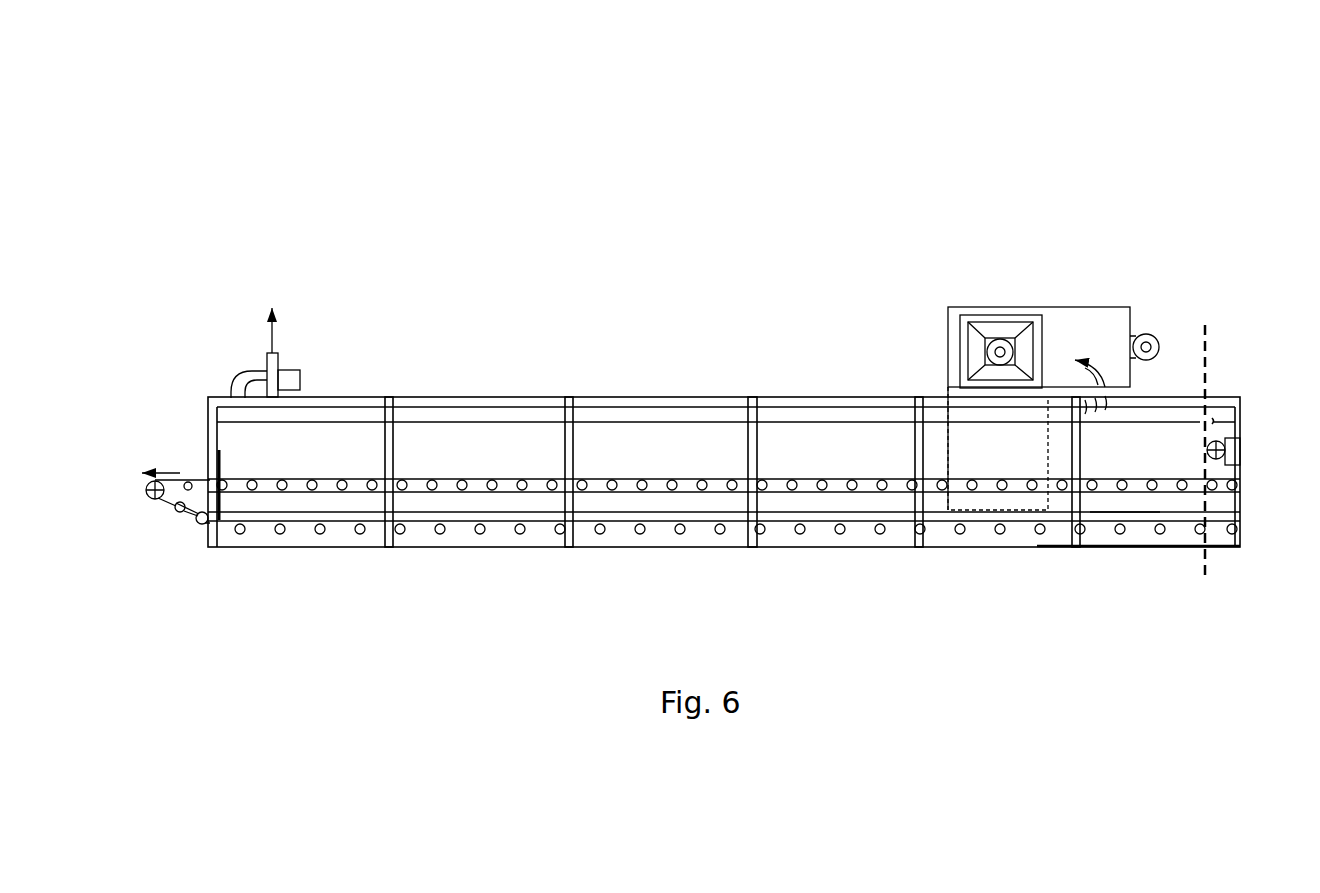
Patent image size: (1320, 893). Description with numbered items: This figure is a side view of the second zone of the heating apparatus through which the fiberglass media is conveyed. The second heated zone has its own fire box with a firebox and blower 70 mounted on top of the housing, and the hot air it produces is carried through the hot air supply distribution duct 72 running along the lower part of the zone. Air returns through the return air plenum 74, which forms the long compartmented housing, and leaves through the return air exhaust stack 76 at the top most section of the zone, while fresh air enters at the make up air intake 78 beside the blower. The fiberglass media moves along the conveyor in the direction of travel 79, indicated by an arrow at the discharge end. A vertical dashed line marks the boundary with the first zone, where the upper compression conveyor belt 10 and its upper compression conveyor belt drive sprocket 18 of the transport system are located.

The upper compression conveyor belt 10 is at (1232, 433).
The upper compression conveyor belt drive sprocket 18 is at (1219, 465).
The blower 70 is at (987, 317).
The hot air supply distribution duct 72 is at (1121, 500).
The return air plenum 74 is at (727, 412).
The return air exhaust stack 76 is at (279, 352).
The make up air intake 78 is at (1150, 335).
The direction of travel 79 is at (173, 472).